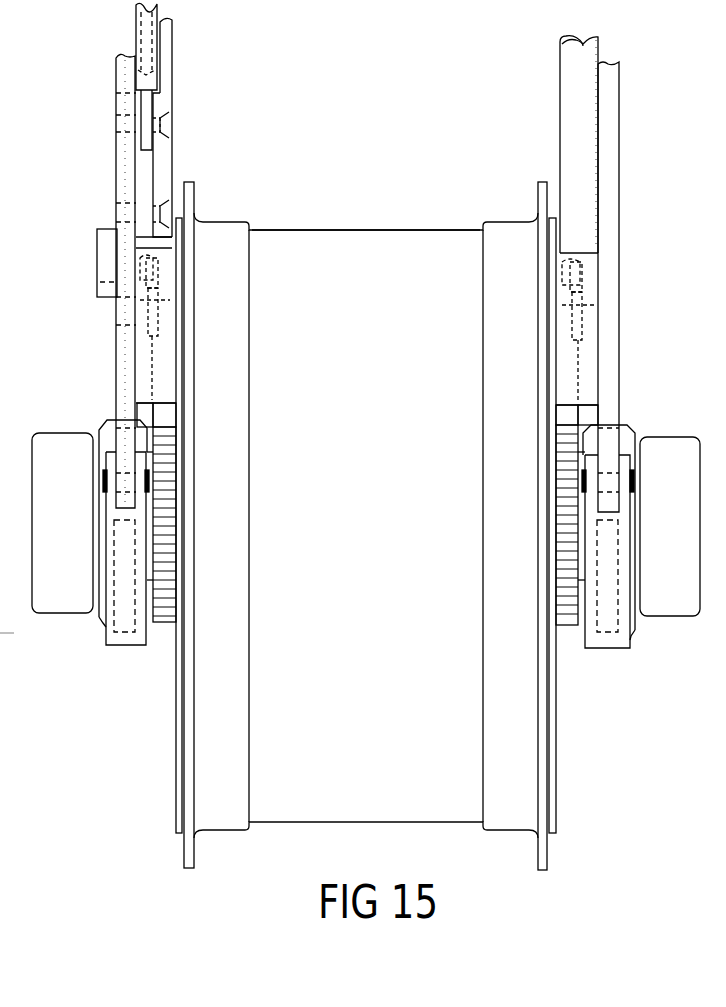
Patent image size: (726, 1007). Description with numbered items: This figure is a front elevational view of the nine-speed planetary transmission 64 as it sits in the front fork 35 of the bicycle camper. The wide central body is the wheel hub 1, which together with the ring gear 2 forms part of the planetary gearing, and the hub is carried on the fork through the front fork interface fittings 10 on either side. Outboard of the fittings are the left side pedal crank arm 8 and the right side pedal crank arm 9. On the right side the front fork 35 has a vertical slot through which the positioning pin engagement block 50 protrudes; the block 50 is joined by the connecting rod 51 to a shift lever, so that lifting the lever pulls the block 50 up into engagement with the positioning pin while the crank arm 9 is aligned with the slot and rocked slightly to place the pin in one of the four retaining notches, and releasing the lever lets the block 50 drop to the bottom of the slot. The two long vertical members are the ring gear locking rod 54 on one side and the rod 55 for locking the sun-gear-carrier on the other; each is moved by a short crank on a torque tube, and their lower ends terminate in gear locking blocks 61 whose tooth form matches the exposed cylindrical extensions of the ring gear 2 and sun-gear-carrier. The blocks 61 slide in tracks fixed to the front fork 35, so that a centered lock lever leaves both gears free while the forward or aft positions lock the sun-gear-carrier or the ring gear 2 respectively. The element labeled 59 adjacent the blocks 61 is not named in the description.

The wheel hub 1 is at (222, 221).
The transmission 64 is at (348, 227).
The front fork 35 is at (116, 68).
The connecting rod 51 is at (136, 23).
The ring gear locking rod 54 is at (173, 37).
The positioning pin engagement block 50 is at (97, 260).
The rod 55 is at (560, 70).
The front fork interface fittings 10 is at (104, 420).
The right side pedal crank arm 9 is at (60, 433).
The left side pedal crank arm 8 is at (665, 437).
The gear locking blocks 61 is at (165, 412).
The slide block 59 is at (126, 645).
The ring gear 2 is at (7, 649).